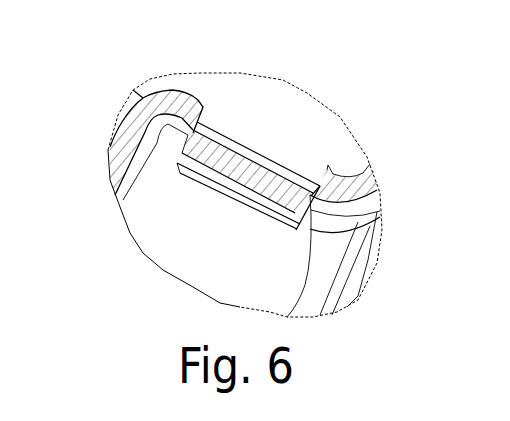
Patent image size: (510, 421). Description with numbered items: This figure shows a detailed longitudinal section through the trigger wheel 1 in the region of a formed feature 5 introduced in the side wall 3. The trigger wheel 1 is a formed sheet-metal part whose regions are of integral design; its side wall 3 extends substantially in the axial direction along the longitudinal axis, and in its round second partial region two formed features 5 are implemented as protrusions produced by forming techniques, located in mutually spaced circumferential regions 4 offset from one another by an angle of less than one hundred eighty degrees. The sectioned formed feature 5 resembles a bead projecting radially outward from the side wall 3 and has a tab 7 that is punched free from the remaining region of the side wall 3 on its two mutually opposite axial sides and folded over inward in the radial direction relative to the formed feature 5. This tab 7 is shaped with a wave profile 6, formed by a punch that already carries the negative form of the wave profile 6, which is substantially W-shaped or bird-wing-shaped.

The trigger wheel 1 is at (88, 194).
The side wall 3 is at (183, 103).
The circumferential regions 4 is at (205, 204).
The formed feature 5 is at (348, 231).
The wave profile 6 is at (242, 178).
The tab 7 is at (338, 132).